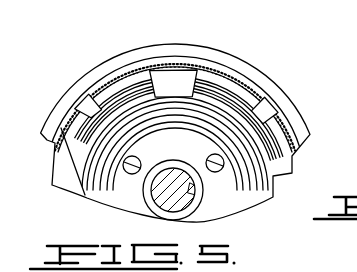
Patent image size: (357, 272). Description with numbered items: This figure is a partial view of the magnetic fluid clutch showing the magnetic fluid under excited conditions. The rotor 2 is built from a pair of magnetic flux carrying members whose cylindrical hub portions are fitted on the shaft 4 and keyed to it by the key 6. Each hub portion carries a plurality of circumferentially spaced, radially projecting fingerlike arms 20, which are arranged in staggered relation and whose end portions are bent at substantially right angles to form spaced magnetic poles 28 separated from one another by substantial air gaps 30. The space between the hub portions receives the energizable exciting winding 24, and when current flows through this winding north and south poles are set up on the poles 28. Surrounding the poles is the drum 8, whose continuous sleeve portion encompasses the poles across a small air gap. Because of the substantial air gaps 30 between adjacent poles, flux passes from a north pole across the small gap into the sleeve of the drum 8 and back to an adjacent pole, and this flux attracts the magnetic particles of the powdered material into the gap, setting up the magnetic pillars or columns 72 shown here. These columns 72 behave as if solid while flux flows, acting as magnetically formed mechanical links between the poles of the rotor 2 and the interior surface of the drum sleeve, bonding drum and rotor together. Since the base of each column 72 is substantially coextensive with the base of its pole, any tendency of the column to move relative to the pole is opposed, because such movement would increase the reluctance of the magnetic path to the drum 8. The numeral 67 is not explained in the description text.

The rotor 2 is at (180, 122).
The shaft 4 is at (171, 184).
The key 6 is at (171, 184).
The drum 8 is at (289, 88).
The fingerlike arms 20 is at (274, 145).
The exciting winding 24 is at (257, 122).
The magnetic poles 28 is at (89, 91).
The air gaps 30 is at (209, 72).
The threads 67 is at (88, 197).
The magnetic pillars or columns 72 is at (100, 83).